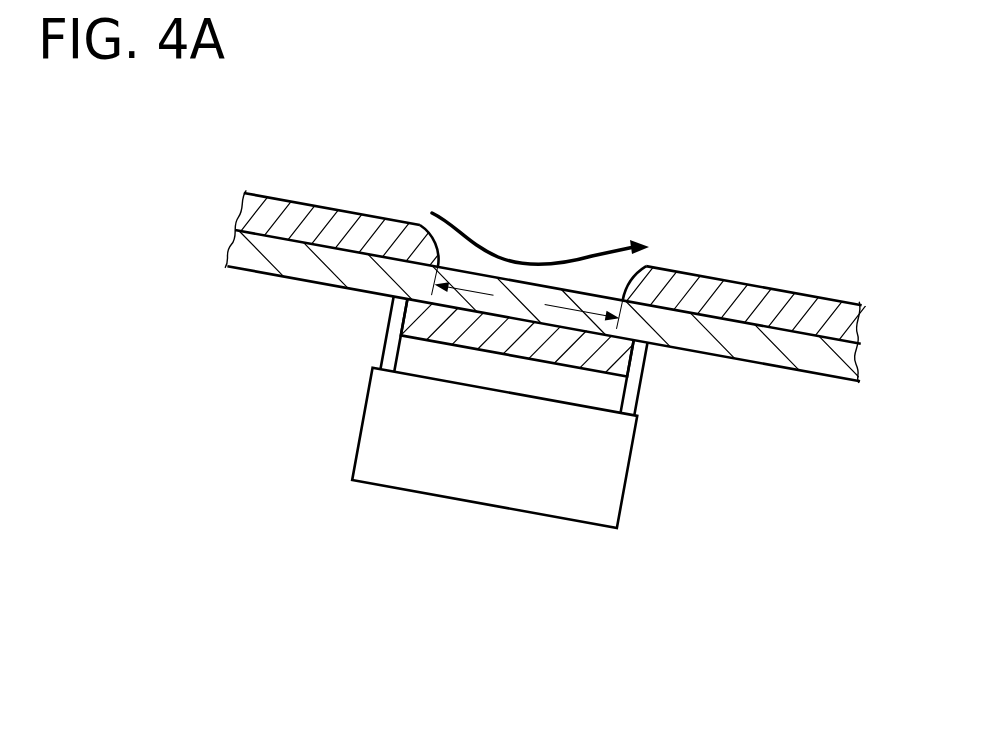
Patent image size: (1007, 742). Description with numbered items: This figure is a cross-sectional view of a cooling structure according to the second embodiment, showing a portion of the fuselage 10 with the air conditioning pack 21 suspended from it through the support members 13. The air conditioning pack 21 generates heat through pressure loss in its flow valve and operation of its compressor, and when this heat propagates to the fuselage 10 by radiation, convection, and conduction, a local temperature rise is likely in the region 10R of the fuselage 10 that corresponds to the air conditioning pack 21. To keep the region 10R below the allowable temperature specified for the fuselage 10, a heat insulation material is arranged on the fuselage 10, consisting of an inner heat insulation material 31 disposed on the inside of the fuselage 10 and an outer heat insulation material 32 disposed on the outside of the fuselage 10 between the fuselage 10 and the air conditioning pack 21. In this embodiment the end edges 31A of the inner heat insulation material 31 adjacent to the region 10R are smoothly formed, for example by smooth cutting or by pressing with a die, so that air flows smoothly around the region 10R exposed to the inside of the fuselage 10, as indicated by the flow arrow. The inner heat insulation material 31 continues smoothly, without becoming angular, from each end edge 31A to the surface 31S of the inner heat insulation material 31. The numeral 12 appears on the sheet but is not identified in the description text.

The display device 12 is at (572, 98).
The fuselage 10 is at (302, 237).
The inner heat insulation material 31 is at (800, 290).
The surface of the inner heat insulation material 31S is at (306, 207).
The end edge of the inner heat insulation material 31A is at (420, 224).
The region of the fuselage 10R is at (526, 301).
The support member 13 is at (387, 349).
The outer heat insulation material 32 is at (540, 358).
The air conditioning pack 21 is at (358, 450).